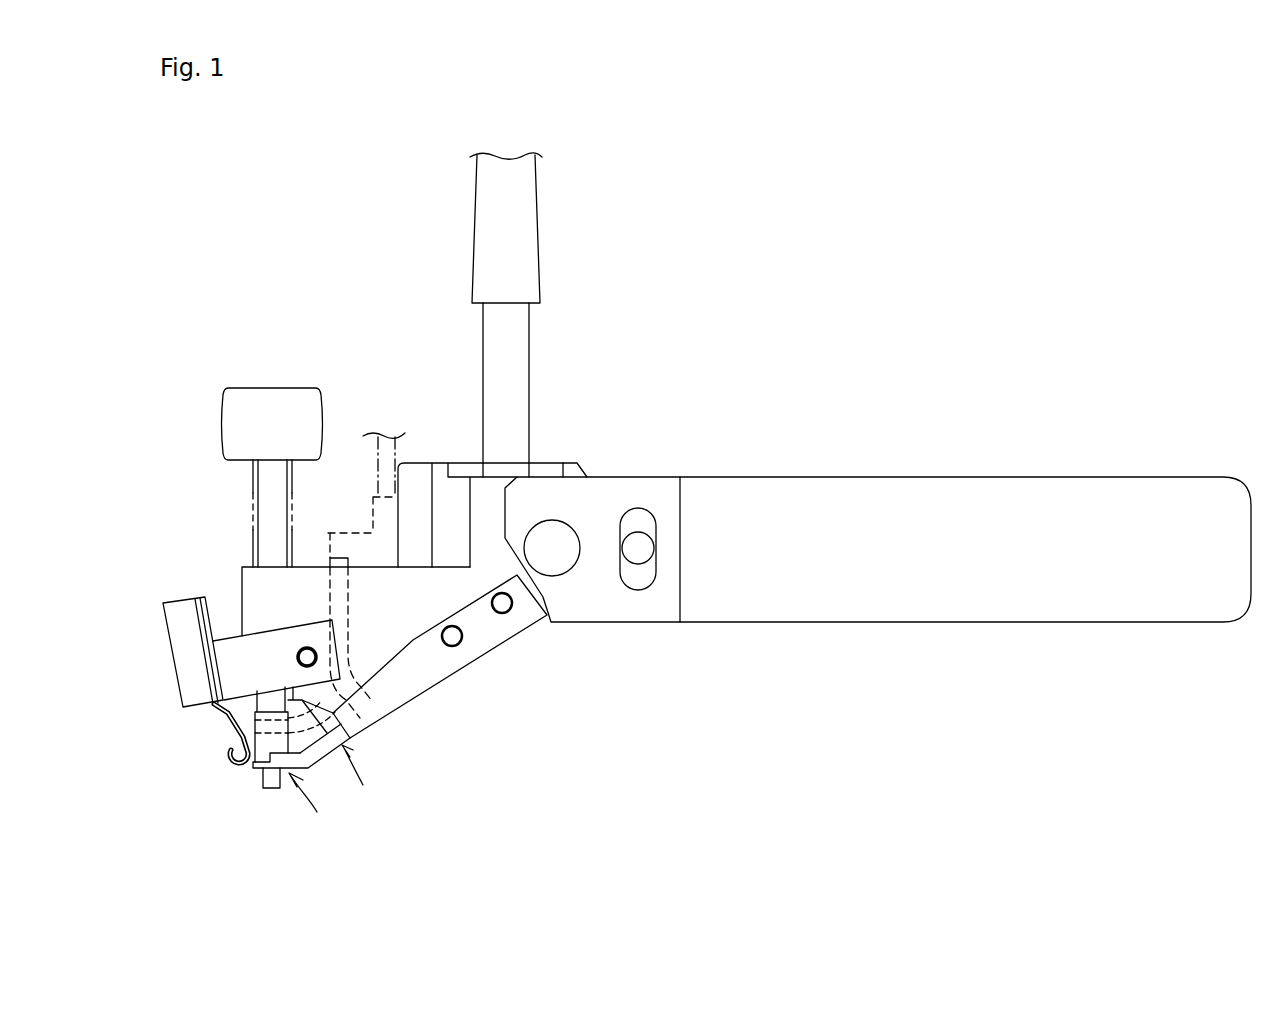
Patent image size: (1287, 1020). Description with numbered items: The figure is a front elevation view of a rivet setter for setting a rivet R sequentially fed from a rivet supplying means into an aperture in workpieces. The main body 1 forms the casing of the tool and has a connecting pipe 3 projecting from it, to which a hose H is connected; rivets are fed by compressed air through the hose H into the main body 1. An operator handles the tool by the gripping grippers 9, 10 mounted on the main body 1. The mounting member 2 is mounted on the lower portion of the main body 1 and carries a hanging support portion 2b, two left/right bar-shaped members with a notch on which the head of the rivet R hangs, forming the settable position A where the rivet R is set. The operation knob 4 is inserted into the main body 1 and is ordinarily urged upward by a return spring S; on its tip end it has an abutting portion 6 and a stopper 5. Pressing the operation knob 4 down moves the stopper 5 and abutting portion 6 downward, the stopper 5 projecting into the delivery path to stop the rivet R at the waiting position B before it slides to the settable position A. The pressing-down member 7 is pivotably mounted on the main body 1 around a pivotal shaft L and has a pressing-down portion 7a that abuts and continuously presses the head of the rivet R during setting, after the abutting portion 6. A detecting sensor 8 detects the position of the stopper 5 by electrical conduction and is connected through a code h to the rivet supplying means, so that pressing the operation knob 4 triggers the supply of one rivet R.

The hose H is at (528, 228).
The connecting pipe 3 is at (530, 351).
The operation knob 4 is at (228, 425).
The return spring S is at (248, 490).
The detecting sensor 8 is at (332, 547).
The code h is at (387, 449).
The main body 1 is at (438, 472).
The gripper 10 is at (557, 530).
The gripper 9 is at (880, 492).
The pressing-down member 7 is at (178, 655).
The pivotal shaft L is at (300, 650).
The mounting member 2 is at (447, 668).
The abutting portion 6 is at (262, 737).
The pressing-down portion 7a is at (222, 760).
The hanging support portion 2b is at (257, 766).
The stopper 5 is at (365, 735).
The waiting position B is at (364, 776).
The settable position A is at (313, 803).
The rivet R is at (273, 793).